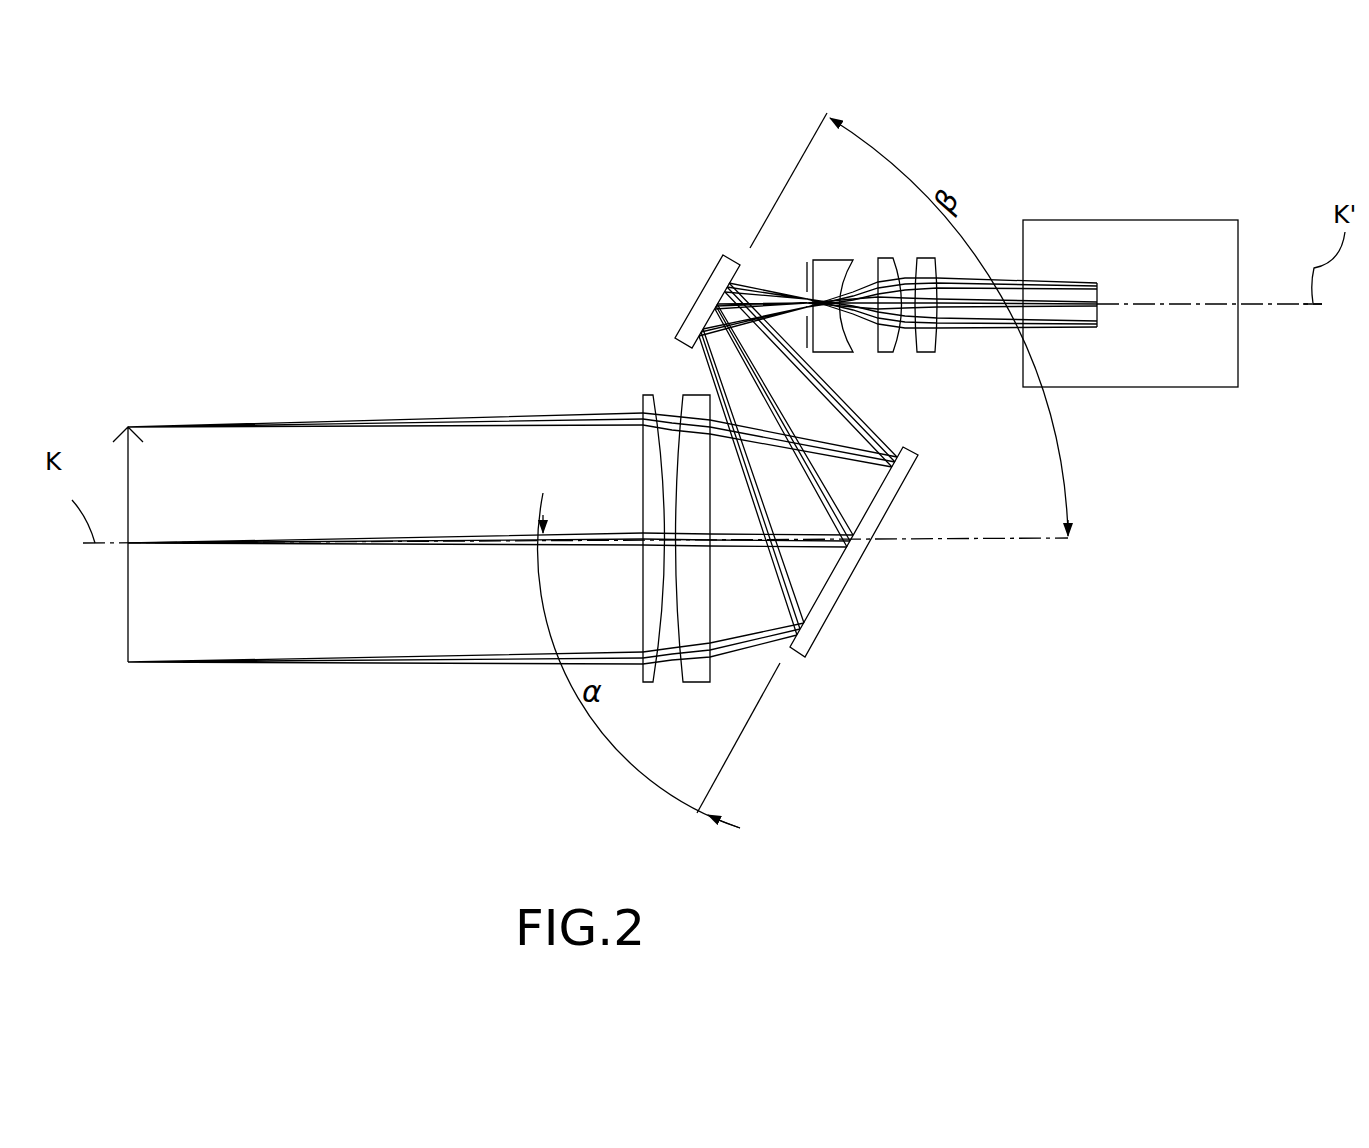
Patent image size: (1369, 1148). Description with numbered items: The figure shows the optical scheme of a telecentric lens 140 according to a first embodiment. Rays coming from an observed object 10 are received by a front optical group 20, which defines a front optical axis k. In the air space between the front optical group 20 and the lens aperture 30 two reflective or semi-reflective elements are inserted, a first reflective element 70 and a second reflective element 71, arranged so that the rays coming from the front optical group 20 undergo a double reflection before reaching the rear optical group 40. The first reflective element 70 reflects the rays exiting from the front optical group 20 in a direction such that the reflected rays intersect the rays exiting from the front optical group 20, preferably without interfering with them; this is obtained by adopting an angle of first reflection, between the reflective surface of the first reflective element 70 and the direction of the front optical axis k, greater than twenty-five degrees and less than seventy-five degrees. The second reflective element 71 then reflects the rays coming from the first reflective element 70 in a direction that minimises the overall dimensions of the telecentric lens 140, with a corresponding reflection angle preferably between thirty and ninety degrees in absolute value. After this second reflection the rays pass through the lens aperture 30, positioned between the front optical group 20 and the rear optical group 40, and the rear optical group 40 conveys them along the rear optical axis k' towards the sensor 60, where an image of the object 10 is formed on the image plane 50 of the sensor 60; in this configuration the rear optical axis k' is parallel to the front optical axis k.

The telecentric lens 140 is at (334, 222).
The observed object 10 is at (128, 478).
The front optical group 20 is at (696, 392).
The lens aperture 30 is at (803, 268).
The rear optical group 40 is at (838, 356).
The image plane 50 is at (1097, 326).
The sensor 60 is at (1204, 219).
The first reflective element 70 is at (852, 582).
The second reflective element 71 is at (693, 302).